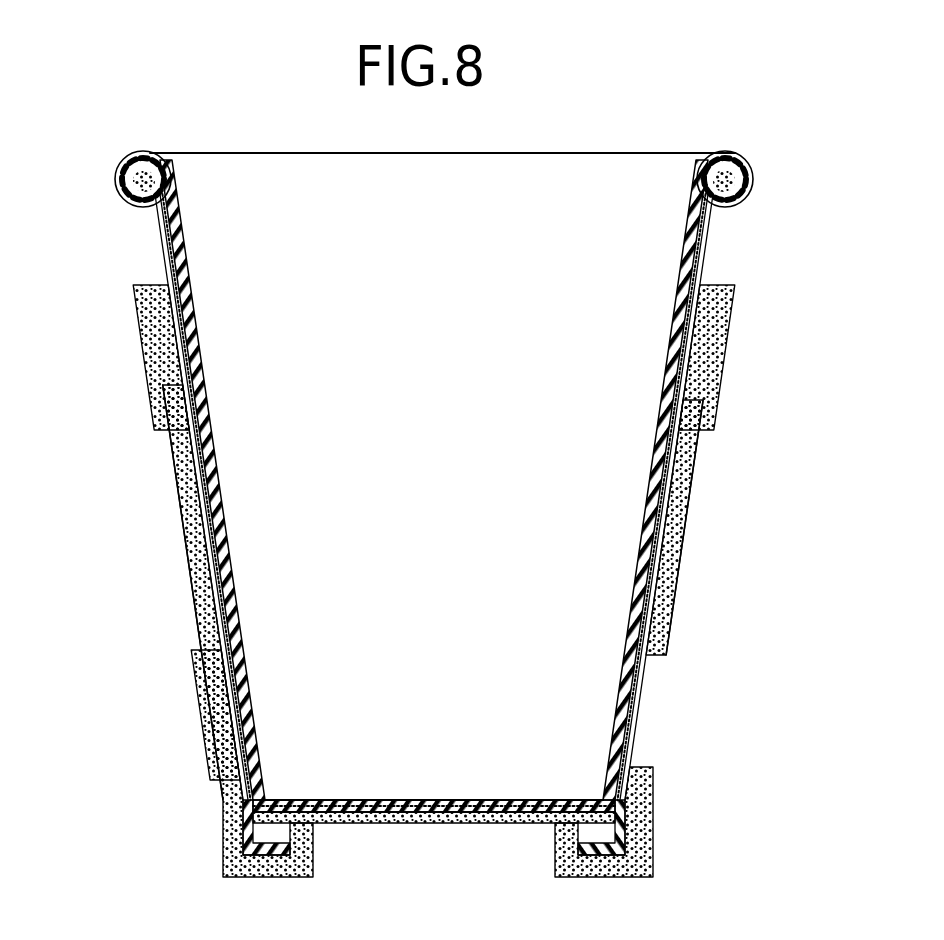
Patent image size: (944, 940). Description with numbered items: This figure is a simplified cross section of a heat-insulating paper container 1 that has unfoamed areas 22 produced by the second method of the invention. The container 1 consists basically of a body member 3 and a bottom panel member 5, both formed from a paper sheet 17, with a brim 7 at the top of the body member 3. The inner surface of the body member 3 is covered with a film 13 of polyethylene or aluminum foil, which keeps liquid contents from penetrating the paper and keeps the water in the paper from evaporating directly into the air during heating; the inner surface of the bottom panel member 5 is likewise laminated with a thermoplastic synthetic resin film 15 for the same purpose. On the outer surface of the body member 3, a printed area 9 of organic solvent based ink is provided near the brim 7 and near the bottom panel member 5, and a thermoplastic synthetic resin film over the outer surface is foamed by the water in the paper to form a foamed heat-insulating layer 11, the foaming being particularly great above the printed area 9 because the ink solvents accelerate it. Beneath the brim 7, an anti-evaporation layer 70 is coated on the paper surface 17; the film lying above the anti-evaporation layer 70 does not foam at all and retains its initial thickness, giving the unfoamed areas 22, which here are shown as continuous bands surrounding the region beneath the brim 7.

The container 1 is at (444, 374).
The body member 3 is at (643, 522).
The bottom panel member 5 is at (443, 798).
The brim 7 is at (729, 151).
The printed area 9 is at (160, 326).
The foamed heat-insulating layer 11 is at (193, 585).
The film 13 is at (216, 452).
The thermoplastic synthetic resin film 15 is at (373, 799).
The paper sheet 17 is at (200, 500).
The unfoamed area 22 is at (153, 212).
The anti-evaporation layer 70 is at (160, 246).